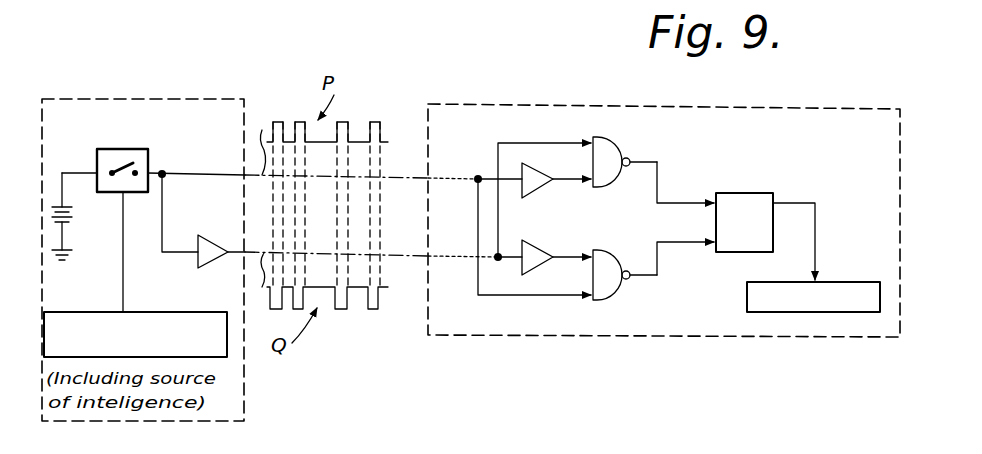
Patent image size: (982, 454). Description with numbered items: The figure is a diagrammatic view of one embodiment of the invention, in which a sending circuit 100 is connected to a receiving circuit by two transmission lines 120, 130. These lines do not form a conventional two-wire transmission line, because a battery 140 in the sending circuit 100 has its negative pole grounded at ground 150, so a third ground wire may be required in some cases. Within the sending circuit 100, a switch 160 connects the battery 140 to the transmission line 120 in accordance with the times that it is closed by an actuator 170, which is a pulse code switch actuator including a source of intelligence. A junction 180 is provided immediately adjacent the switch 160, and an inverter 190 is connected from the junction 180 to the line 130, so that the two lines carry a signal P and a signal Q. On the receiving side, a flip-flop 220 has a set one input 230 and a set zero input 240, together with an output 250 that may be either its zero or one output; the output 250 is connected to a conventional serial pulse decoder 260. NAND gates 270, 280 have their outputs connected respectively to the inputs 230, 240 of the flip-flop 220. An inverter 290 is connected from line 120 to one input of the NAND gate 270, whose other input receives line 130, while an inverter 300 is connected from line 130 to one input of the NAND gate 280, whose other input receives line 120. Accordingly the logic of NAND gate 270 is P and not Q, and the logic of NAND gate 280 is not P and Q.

The sending circuit 100 is at (248, 400).
The transmission line 120 is at (400, 176).
The transmission line 130 is at (410, 255).
The battery 140 is at (78, 216).
The ground 150 is at (70, 258).
The switch 160 is at (133, 149).
The actuator 170 is at (148, 312).
The junction 180 is at (166, 172).
The inverter 190 is at (213, 236).
The flip-flop 220 is at (734, 193).
The set "1" input 230 is at (660, 200).
The set "0" input 240 is at (676, 244).
The output 250 is at (805, 203).
The serial pulse decoder 260 is at (839, 282).
The NAND gate 270 is at (610, 138).
The NAND gate 280 is at (610, 300).
The inverter 290 is at (527, 165).
The inverter 300 is at (532, 241).